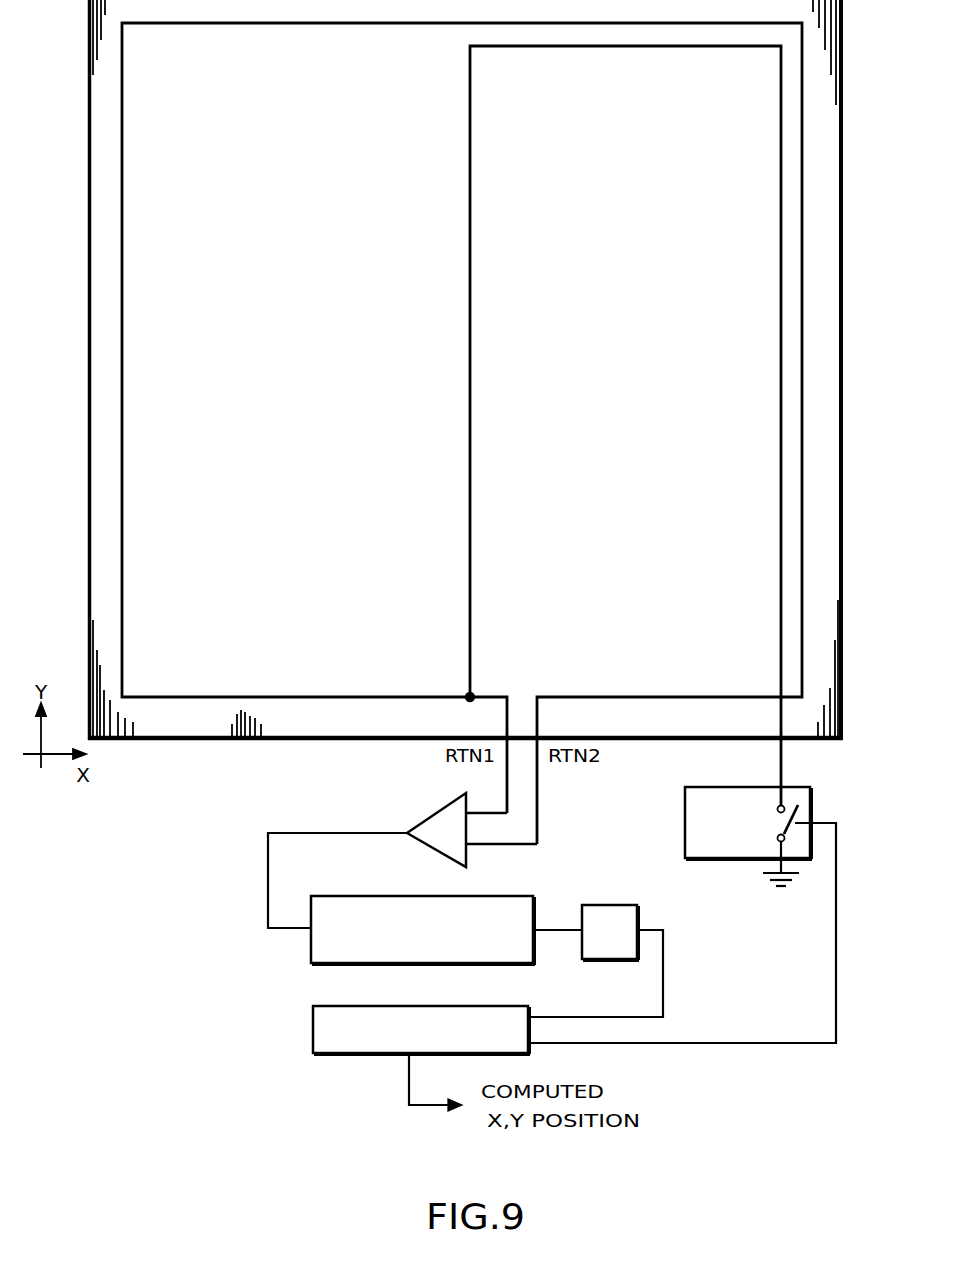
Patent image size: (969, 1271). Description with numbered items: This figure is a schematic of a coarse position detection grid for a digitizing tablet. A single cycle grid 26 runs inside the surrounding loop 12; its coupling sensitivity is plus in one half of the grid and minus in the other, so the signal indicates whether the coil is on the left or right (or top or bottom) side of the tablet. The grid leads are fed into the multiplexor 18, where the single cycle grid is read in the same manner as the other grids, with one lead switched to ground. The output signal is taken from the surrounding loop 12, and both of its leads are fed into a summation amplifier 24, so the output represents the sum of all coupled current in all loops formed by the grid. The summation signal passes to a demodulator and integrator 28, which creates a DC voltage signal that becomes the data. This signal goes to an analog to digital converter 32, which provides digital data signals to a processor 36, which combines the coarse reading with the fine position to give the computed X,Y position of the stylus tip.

The surrounding loop 12 is at (122, 242).
The single cycle grid 26 is at (470, 322).
The summation amplifier 24 is at (440, 810).
The demodulator and integrator 28 is at (394, 896).
The analog to digital converter 32 is at (612, 905).
The multiplexor 18 is at (685, 806).
The processor 36 is at (313, 1041).